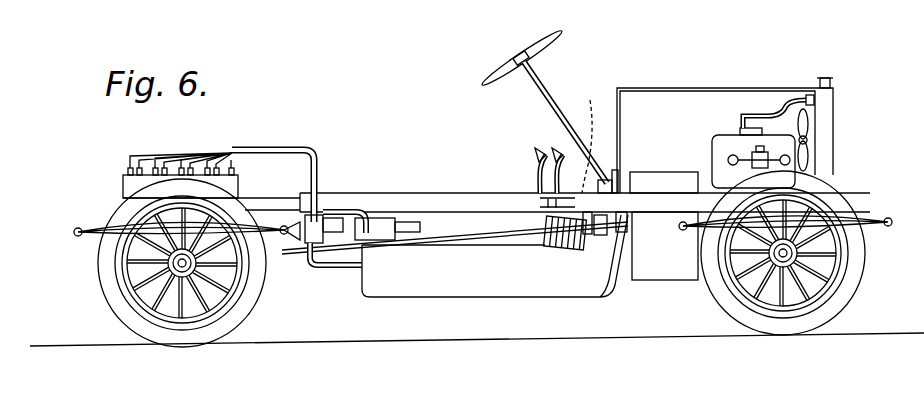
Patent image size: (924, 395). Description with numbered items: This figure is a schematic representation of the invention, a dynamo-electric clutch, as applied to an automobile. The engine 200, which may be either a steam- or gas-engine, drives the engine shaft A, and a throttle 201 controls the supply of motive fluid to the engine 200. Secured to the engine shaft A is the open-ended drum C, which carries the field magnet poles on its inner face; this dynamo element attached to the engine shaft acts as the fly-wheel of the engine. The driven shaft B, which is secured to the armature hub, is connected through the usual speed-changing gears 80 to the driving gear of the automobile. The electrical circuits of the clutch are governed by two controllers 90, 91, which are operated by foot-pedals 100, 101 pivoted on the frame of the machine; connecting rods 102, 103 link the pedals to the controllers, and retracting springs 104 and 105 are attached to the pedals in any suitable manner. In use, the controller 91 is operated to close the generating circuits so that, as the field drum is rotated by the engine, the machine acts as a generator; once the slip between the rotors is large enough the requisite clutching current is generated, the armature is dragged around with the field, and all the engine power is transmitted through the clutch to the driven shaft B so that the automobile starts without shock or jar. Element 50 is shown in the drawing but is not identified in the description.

The engine 50 is at (128, 186).
The speed-changing gears 80 is at (562, 238).
The controller 90 is at (378, 217).
The controller 91 is at (329, 217).
The foot-pedal 100 is at (556, 150).
The foot-pedal 101 is at (536, 152).
The connecting rod 102 is at (447, 221).
The connecting rod 103 is at (350, 216).
The retracting spring 104 is at (565, 200).
The retracting spring 105 is at (548, 84).
The engine 200 is at (728, 150).
The throttle 201 is at (508, 62).
The engine shaft A is at (690, 228).
The driven shaft B is at (613, 228).
The open-ended drum C is at (686, 266).